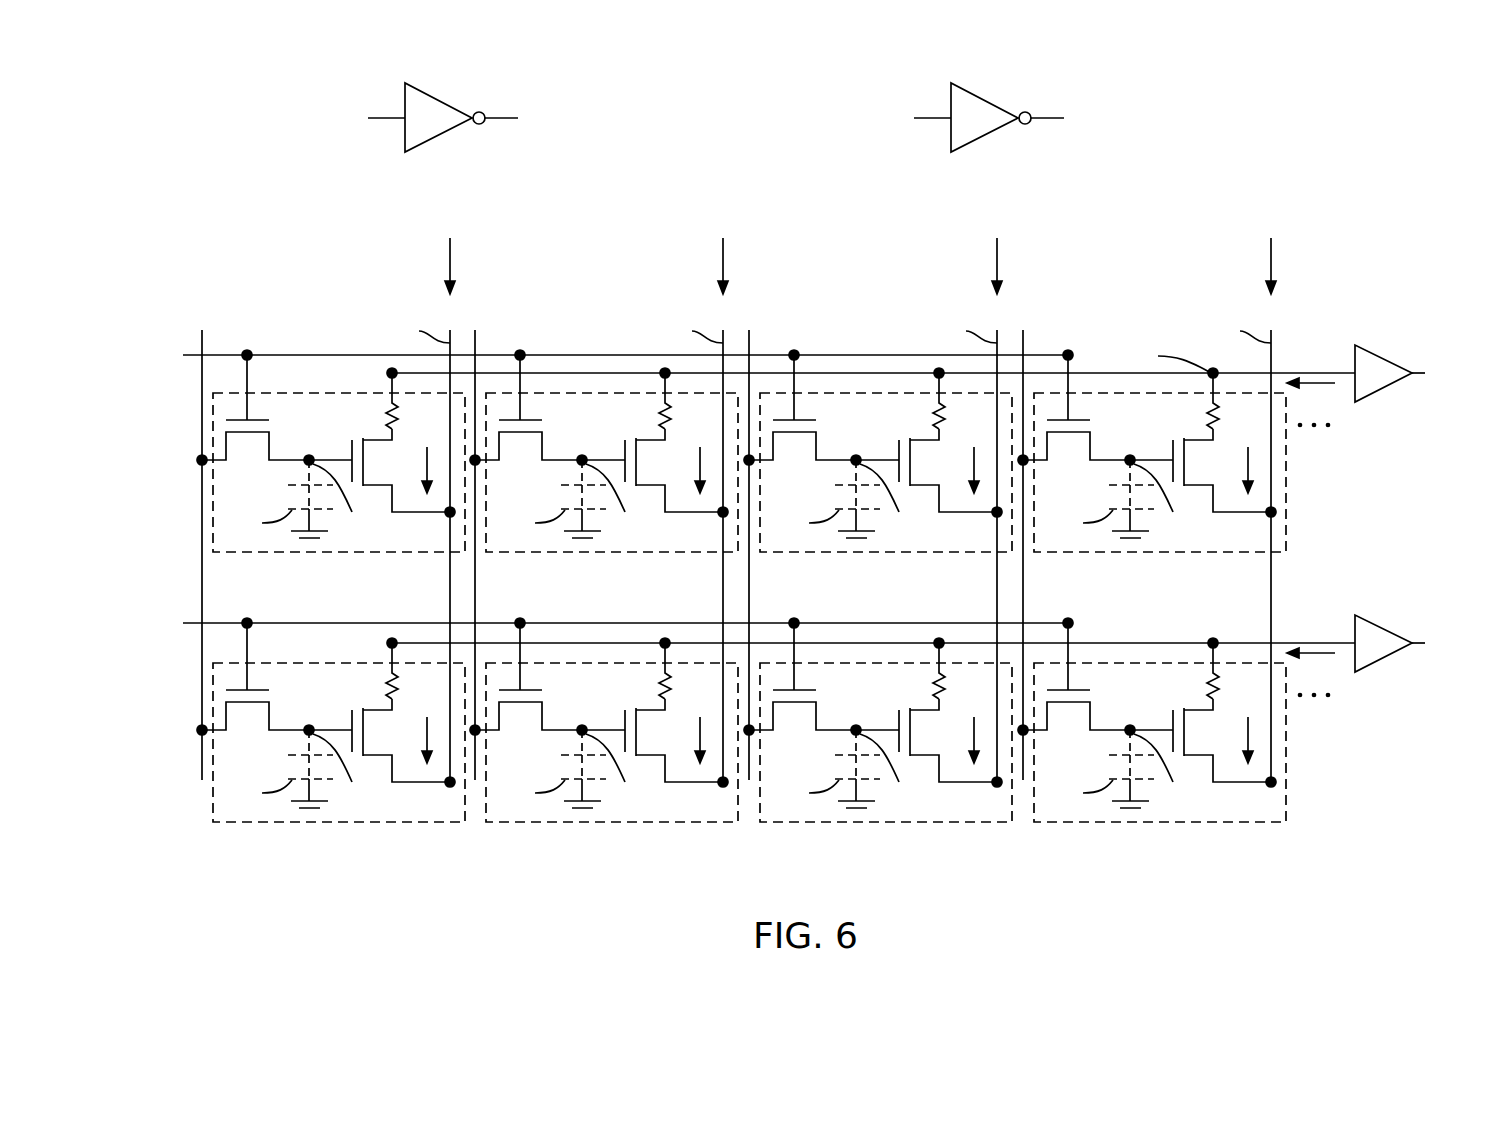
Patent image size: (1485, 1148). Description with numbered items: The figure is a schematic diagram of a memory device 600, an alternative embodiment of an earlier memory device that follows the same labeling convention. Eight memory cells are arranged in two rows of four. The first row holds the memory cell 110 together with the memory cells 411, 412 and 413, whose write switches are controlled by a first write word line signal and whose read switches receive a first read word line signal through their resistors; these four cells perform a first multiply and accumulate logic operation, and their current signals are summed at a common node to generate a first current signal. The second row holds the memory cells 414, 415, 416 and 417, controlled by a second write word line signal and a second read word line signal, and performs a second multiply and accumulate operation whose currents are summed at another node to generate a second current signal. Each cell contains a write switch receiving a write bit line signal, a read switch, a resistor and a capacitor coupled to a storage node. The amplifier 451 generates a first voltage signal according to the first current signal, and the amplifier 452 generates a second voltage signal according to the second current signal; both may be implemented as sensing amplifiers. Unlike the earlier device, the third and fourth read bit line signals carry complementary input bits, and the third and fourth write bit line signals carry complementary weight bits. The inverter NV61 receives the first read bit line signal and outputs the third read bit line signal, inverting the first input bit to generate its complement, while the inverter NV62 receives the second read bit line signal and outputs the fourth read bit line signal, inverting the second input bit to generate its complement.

The memory device 600 is at (157, 78).
The memory cell 110 is at (290, 552).
The memory cell 411 is at (604, 472).
The memory cell 412 is at (878, 472).
The memory cell 413 is at (1152, 472).
The memory cell 414 is at (331, 742).
The memory cell 415 is at (604, 742).
The memory cell 416 is at (878, 742).
The memory cell 417 is at (1152, 742).
The amplifier 451 is at (1376, 358).
The amplifier 452 is at (1376, 628).
The inverter NV61 is at (437, 97).
The inverter NV62 is at (983, 97).